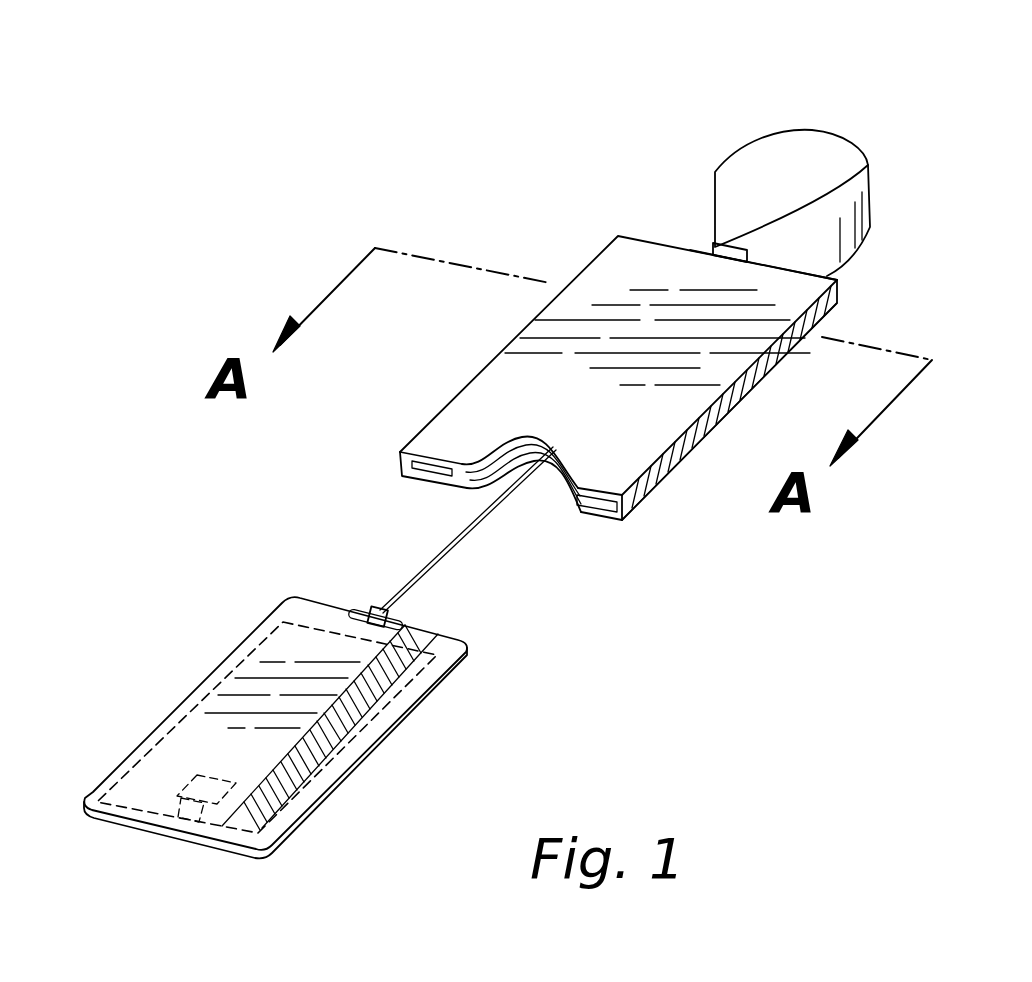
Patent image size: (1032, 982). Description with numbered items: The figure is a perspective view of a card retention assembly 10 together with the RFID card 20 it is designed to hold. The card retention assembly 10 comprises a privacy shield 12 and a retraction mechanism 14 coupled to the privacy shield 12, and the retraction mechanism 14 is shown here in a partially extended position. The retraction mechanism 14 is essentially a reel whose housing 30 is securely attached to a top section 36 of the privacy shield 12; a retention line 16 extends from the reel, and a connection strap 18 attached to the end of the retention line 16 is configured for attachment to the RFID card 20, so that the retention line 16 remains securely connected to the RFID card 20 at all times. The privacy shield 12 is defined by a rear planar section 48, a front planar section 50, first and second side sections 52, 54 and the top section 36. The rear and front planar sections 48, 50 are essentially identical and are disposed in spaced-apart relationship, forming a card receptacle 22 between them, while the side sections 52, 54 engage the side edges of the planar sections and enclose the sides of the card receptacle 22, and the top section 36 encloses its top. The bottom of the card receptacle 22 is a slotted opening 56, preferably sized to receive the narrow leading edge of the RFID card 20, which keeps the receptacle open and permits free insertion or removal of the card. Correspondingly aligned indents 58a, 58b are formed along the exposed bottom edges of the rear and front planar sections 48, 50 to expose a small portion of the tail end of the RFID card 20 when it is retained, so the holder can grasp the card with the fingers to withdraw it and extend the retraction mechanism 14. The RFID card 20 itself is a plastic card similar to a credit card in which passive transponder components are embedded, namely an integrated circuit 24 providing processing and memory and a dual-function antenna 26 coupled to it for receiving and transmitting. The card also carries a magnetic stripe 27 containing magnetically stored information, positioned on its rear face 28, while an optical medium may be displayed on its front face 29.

The card retention assembly 10 is at (283, 197).
The privacy shield 12 is at (522, 335).
The retraction mechanism 14 is at (828, 150).
The retention line 16 is at (448, 558).
The connection strap 18 is at (372, 608).
The RFID card 20 is at (215, 668).
The card receptacle 22 is at (598, 507).
The integrated circuit 24 is at (200, 776).
The antenna 26 is at (162, 737).
The magnetic stripe 27 is at (210, 828).
The rear face 28 is at (288, 640).
The front face 29 is at (347, 772).
The housing 30 is at (748, 166).
The top section 36 is at (826, 277).
The rear planar section 48 is at (470, 418).
The front planar section 50 is at (703, 442).
The first side section 52 is at (786, 344).
The second side section 54 is at (480, 366).
The slotted opening 56 is at (440, 470).
The indent 58a is at (545, 448).
The indent 58b is at (552, 466).